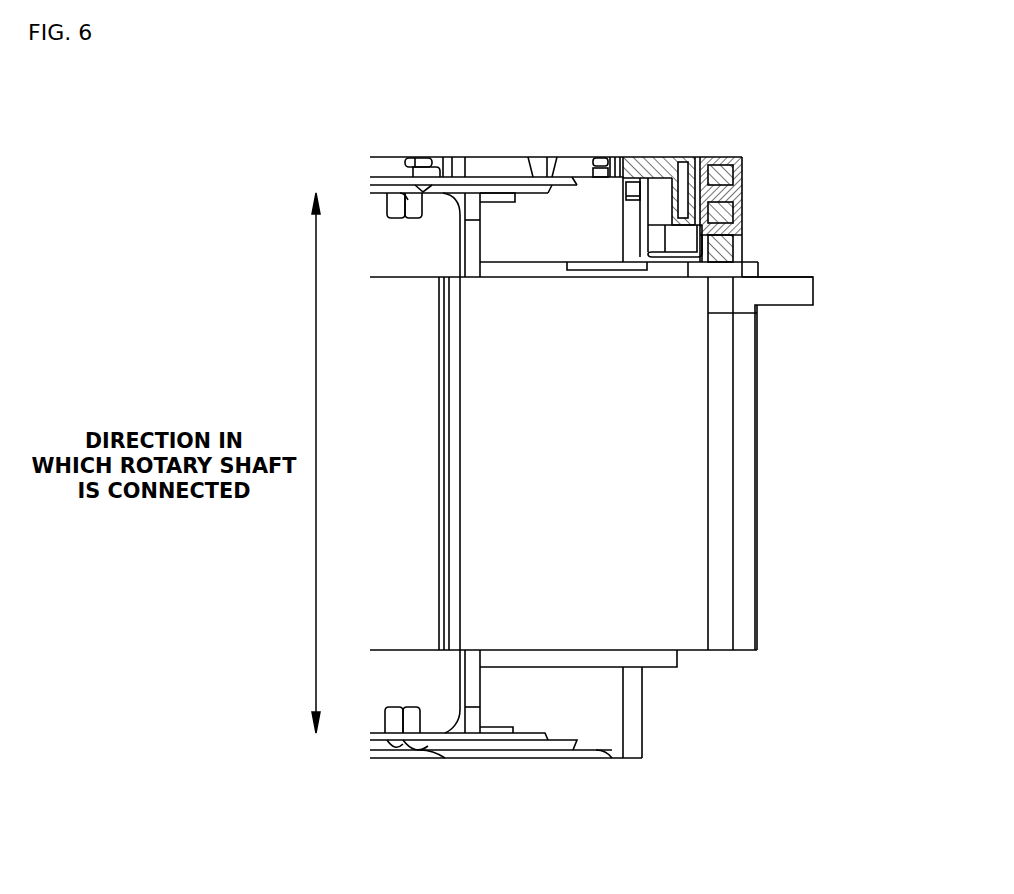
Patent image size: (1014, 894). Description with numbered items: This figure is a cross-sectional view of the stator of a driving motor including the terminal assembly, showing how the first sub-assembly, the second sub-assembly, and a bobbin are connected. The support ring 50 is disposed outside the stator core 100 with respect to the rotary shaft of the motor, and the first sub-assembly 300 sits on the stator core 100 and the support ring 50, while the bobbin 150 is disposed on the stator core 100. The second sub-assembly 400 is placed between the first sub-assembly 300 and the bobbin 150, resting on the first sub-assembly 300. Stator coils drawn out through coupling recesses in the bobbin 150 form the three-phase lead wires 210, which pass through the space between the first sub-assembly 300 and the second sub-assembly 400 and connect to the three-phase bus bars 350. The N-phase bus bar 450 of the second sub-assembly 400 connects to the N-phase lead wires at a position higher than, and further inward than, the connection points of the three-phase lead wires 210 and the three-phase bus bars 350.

The support ring 50 is at (807, 297).
The stator core 100 is at (636, 397).
The bobbin 150 is at (630, 222).
The three-phase lead wires 210 is at (672, 257).
The first sub-assembly 300 is at (724, 130).
The three-phase bus bars 350 is at (740, 205).
The second sub-assembly 400 is at (637, 132).
The N-phase bus bar 450 is at (668, 162).